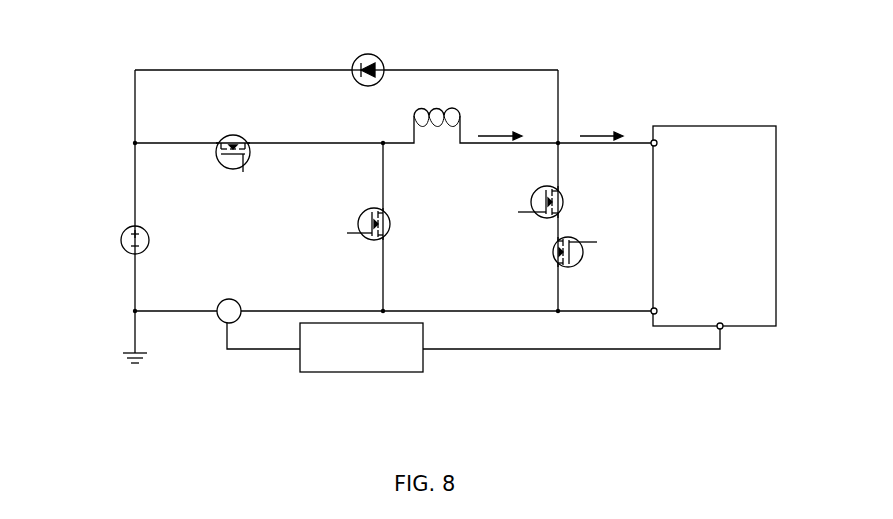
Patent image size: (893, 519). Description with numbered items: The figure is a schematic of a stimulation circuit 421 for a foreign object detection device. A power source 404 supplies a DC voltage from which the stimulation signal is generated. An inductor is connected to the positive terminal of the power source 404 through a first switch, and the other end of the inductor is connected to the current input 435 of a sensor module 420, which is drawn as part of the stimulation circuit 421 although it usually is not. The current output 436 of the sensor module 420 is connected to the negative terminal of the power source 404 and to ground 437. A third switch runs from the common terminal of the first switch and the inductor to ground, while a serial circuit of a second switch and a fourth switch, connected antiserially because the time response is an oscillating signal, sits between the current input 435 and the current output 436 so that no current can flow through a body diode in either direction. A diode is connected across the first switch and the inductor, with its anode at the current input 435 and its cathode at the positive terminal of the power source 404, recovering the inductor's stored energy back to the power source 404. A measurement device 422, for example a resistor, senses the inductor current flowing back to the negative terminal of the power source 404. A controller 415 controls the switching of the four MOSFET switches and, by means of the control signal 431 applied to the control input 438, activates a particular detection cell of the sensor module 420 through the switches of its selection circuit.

The stimulation circuit 421 is at (105, 72).
The power source 404 is at (124, 235).
The ground 437 is at (130, 351).
The measurement device 422 is at (222, 324).
The control signal 431 is at (541, 351).
The controller 415 is at (361, 347).
The sensor module 420 is at (714, 226).
The current input 435 is at (651, 139).
The current output 436 is at (650, 307).
The control input 438 is at (726, 332).